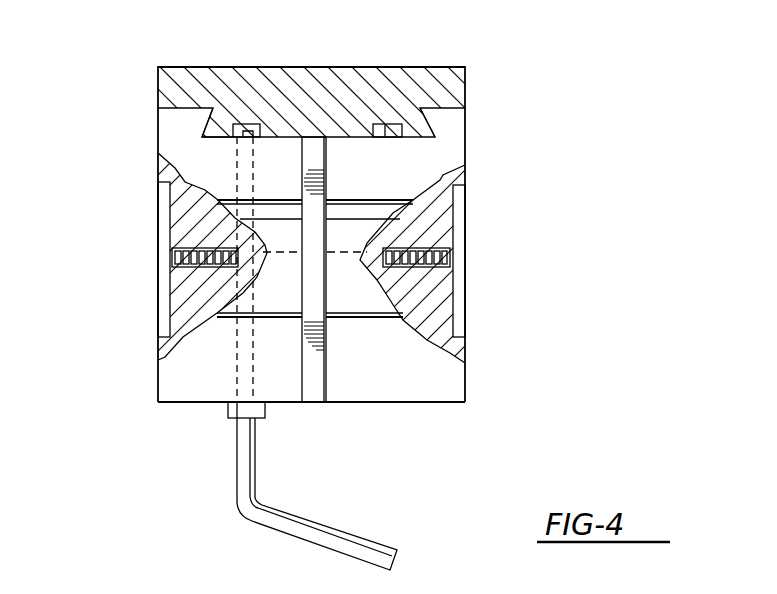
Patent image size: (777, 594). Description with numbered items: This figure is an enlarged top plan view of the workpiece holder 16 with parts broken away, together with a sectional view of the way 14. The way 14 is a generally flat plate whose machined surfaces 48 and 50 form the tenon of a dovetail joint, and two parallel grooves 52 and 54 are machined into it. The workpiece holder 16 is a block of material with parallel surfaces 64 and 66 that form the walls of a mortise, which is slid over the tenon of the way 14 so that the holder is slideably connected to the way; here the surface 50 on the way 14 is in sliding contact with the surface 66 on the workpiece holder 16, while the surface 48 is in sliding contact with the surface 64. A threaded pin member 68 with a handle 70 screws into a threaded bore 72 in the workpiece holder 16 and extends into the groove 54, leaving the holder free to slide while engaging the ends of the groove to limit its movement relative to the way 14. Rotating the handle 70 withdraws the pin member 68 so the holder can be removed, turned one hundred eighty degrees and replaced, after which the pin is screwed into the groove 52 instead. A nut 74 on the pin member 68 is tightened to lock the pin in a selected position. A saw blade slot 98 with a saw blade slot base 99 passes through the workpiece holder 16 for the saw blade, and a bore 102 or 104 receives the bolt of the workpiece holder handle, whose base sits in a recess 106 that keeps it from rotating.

The way 14 is at (158, 98).
The workpiece holder 16 is at (443, 403).
The machined surface 48 is at (425, 135).
The machined surface 50 is at (200, 134).
The groove 52 is at (386, 132).
The groove 54 is at (240, 134).
The surface 64 is at (432, 132).
The surface 66 is at (214, 118).
The threaded pin member 68 is at (243, 470).
The handle 70 is at (380, 540).
The threaded bore 72 is at (237, 370).
The nut 74 is at (229, 418).
The saw blade slot 98 is at (305, 396).
The saw blade slot base 99 is at (322, 363).
The bore 102 is at (180, 258).
The bore 104 is at (442, 262).
The recess 106 is at (165, 336).